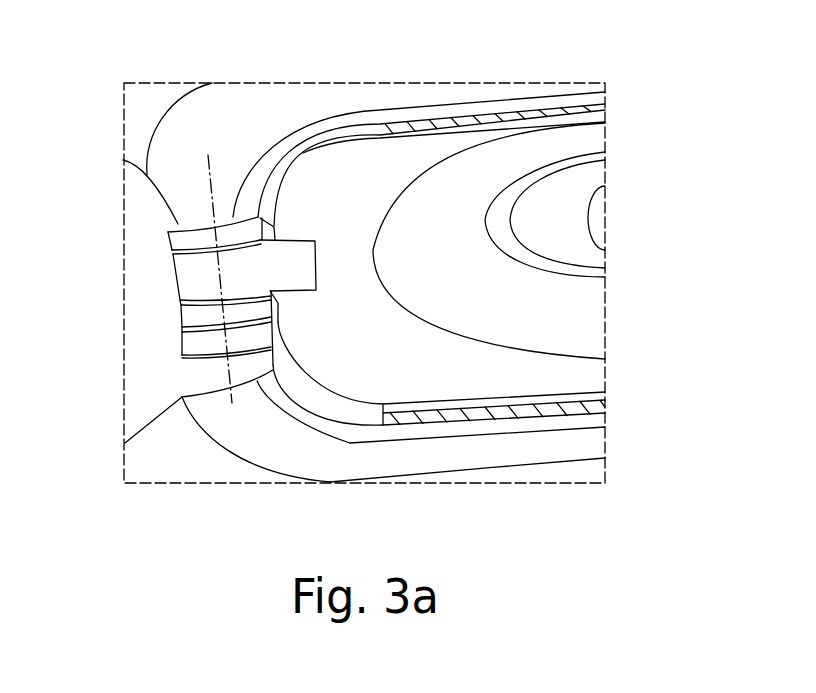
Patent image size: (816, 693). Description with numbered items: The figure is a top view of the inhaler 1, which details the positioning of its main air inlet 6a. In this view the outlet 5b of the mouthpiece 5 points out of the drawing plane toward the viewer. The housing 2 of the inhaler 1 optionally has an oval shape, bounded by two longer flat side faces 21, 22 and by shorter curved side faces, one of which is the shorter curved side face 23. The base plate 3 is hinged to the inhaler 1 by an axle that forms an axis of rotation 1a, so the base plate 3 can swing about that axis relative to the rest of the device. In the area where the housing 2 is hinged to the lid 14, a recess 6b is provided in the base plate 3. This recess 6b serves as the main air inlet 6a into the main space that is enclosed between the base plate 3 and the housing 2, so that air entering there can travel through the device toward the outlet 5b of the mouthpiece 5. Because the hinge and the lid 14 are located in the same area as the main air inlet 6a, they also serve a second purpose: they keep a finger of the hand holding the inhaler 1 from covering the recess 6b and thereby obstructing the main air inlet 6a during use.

The inhaler 1 is at (652, 183).
The axis of rotation 1a is at (203, 172).
The housing 2 is at (593, 423).
The base plate 3 is at (605, 402).
The mouthpiece 5 is at (475, 365).
The outlet 5b is at (592, 258).
The main air inlet 6a is at (178, 355).
The recess 6b is at (248, 302).
The lid 14 is at (143, 402).
The longer flat side face 21 is at (527, 435).
The longer flat side face 22 is at (382, 112).
The shorter curved side face 23 is at (292, 435).